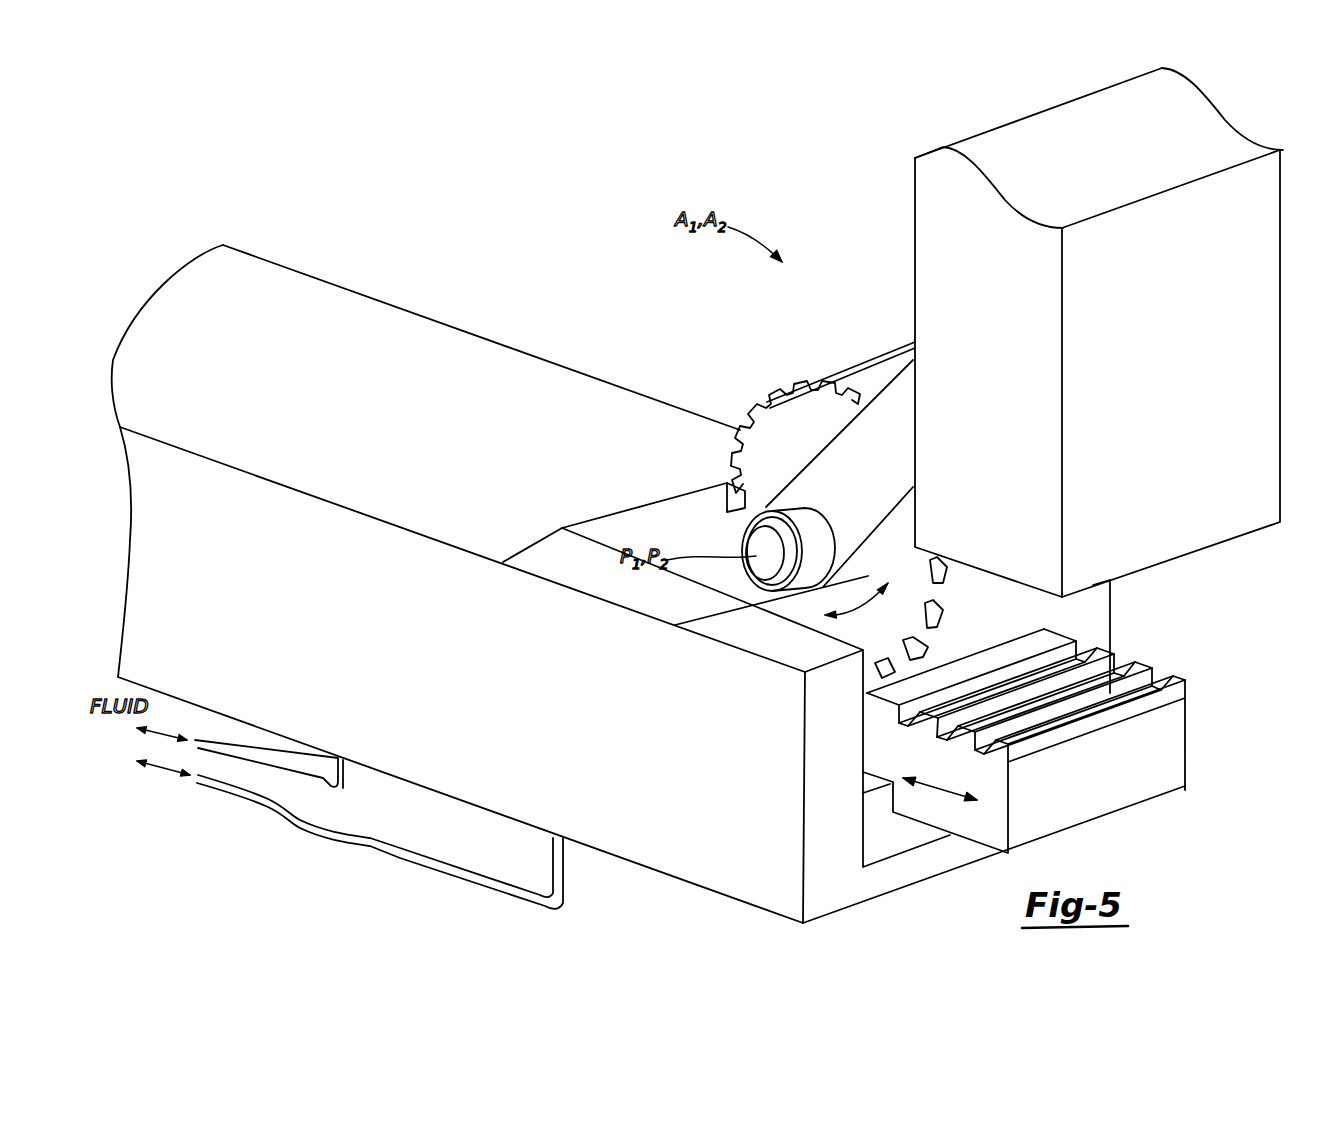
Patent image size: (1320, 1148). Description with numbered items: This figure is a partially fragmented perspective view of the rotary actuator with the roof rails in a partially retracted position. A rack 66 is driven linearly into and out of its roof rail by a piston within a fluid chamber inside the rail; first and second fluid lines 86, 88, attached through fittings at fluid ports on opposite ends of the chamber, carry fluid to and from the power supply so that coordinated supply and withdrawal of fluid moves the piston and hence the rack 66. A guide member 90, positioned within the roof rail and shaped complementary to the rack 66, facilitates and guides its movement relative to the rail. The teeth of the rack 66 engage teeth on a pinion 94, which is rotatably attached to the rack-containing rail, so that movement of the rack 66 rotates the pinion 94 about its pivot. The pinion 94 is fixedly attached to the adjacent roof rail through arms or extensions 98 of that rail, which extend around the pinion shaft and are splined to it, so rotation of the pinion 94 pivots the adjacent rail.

The rack 66 is at (1128, 779).
The first fluid line 86 is at (341, 790).
The second fluid line 88 is at (556, 908).
The guide member 90 is at (877, 838).
The pinion 94 is at (760, 420).
The arms or extensions 98 is at (893, 413).